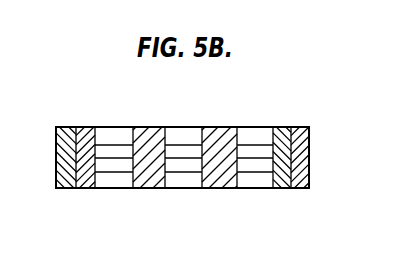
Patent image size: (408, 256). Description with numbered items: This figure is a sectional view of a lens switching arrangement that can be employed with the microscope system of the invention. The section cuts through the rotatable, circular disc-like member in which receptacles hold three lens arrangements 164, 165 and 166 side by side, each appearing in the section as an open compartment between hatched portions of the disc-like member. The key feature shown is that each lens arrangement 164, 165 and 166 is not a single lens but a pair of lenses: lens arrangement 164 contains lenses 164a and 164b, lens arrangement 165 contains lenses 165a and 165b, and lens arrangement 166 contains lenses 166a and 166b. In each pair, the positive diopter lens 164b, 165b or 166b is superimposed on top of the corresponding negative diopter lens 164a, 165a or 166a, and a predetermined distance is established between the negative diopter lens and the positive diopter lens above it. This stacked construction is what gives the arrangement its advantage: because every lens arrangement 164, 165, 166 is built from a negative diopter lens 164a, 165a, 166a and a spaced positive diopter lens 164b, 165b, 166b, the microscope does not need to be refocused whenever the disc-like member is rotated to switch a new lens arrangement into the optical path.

The lens arrangement 164 is at (166, 191).
The negative diopter lens 164a is at (172, 164).
The positive diopter lens 164b is at (184, 146).
The lens arrangement 165 is at (93, 191).
The negative diopter lens 165a is at (103, 164).
The positive diopter lens 165b is at (108, 150).
The lens arrangement 166 is at (248, 191).
The negative diopter lens 166a is at (262, 164).
The positive diopter lens 166b is at (256, 151).